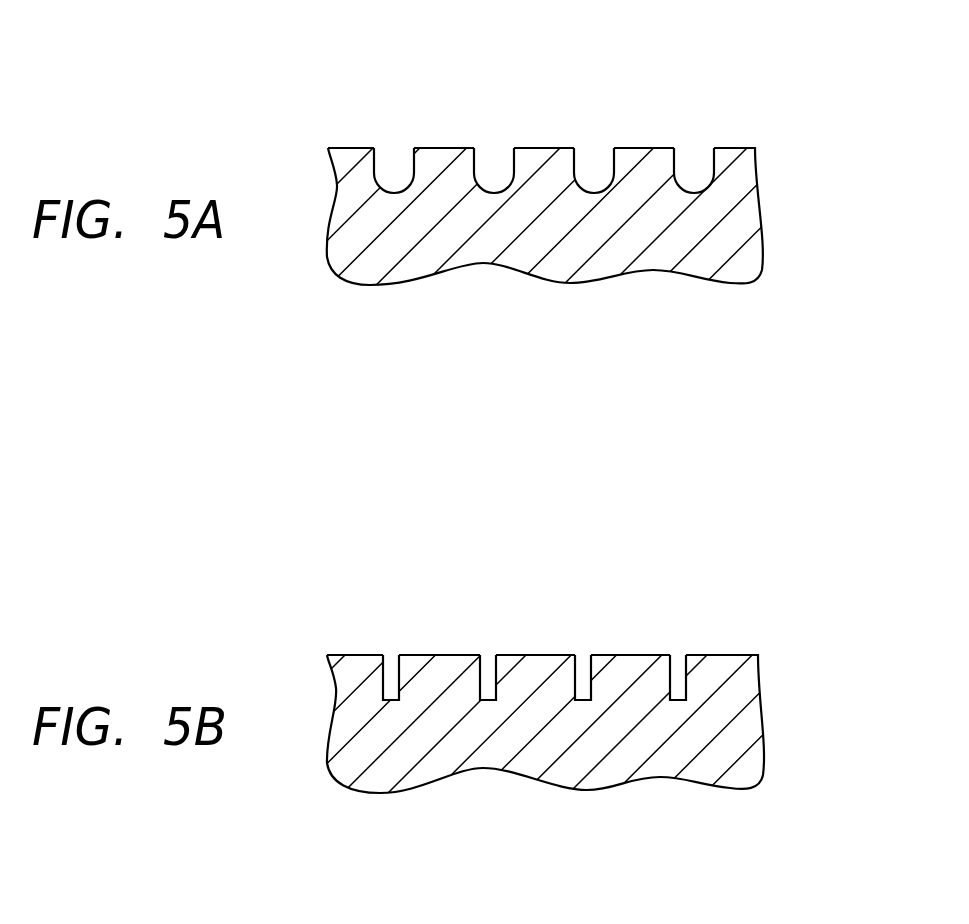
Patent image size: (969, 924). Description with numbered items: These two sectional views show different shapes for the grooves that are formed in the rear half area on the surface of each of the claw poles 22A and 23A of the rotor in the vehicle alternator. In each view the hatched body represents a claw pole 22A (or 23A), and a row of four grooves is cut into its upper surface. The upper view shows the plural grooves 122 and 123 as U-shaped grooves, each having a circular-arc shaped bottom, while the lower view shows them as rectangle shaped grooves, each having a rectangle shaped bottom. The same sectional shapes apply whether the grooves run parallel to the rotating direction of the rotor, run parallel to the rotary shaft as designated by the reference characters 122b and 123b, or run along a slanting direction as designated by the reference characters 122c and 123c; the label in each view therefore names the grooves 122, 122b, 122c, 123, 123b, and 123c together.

In FIG. 5A, the grooves 122 is at (601, 115).
In FIG. 5B, the grooves 122 is at (605, 615).
In FIG. 5A, the grooves 122b is at (394, 170).
In FIG. 5B, the grooves 122b is at (391, 677).
In FIG. 5A, the grooves 122c is at (494, 170).
In FIG. 5B, the grooves 122c is at (488, 677).
In FIG. 5A, the grooves 123 is at (594, 170).
In FIG. 5B, the grooves 123 is at (583, 677).
In FIG. 5A, the grooves 123b is at (594, 170).
In FIG. 5B, the grooves 123b is at (583, 677).
In FIG. 5A, the grooves 123c is at (693, 173).
In FIG. 5B, the grooves 123c is at (680, 670).
In FIG. 5A, the claw pole 22A is at (572, 220).
In FIG. 5B, the claw pole 22A is at (561, 722).
In FIG. 5A, the claw pole 23A is at (737, 210).
In FIG. 5B, the claw pole 23A is at (737, 730).